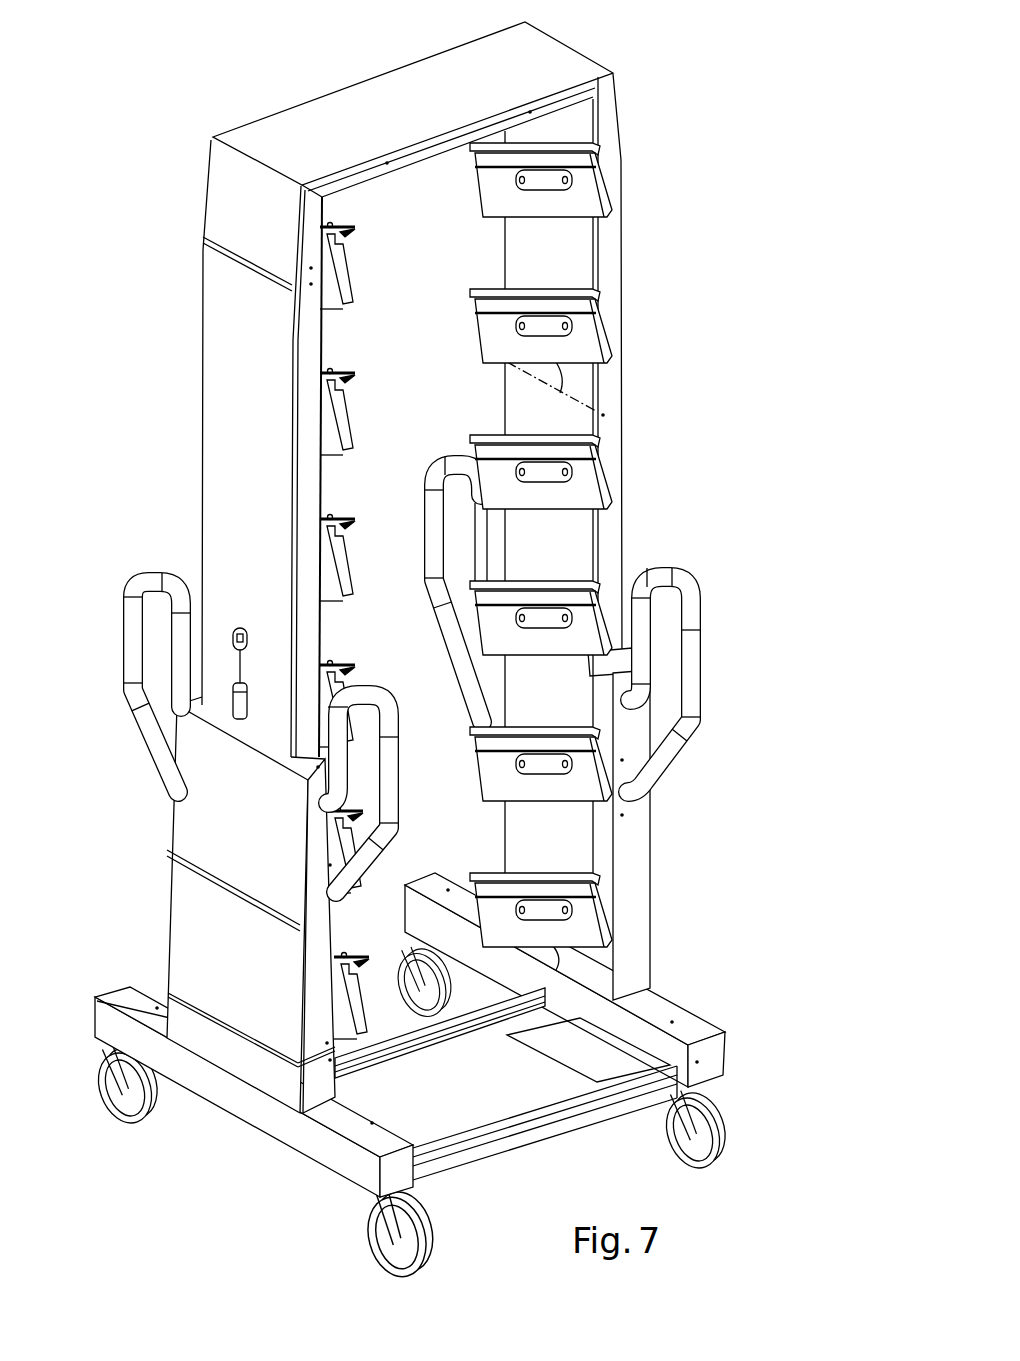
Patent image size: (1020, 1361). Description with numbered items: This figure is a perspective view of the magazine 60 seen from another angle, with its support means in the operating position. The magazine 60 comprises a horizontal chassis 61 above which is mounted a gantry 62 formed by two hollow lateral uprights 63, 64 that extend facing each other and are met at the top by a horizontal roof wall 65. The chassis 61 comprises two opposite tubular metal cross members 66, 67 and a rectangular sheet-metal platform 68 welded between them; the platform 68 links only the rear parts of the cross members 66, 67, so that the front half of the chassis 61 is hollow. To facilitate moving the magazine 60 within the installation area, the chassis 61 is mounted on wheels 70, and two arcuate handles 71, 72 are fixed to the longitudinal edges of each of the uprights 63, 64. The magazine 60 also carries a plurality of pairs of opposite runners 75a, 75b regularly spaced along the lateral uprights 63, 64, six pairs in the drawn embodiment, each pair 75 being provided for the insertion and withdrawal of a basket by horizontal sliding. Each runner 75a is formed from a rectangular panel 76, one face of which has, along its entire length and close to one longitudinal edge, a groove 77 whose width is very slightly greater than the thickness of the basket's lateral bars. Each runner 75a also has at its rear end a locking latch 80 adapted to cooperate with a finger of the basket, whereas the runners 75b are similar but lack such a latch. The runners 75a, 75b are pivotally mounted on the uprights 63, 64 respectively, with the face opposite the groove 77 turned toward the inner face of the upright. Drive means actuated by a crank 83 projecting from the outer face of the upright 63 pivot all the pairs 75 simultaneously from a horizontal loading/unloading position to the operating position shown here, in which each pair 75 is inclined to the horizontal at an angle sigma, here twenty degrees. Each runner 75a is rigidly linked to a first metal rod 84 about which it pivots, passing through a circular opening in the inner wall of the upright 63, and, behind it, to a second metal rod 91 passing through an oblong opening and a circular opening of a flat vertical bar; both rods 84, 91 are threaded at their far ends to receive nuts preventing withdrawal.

The magazine 60 is at (695, 35).
The horizontal chassis 61 is at (686, 960).
The gantry 62 is at (681, 458).
The lateral upright 63 is at (222, 342).
The lateral upright 64 is at (613, 260).
The horizontal roof wall 65 is at (365, 98).
The tubular metal cross member 66 is at (272, 1115).
The tubular metal cross member 67 is at (695, 1026).
The rectangular platform 68 is at (503, 1111).
The wheels 70 is at (147, 1108).
The arcuate handle 71 is at (433, 527).
The arcuate handle 72 is at (392, 778).
The pair of runners 75 is at (660, 169).
The runner 75a is at (331, 298).
The runner 75b is at (585, 186).
The panel 76 is at (598, 343).
The groove 77 is at (500, 301).
The locking latch 80 is at (350, 233).
The crank 83 is at (233, 667).
The first metal rod 84 is at (522, 187).
The second metal rod 91 is at (572, 188).